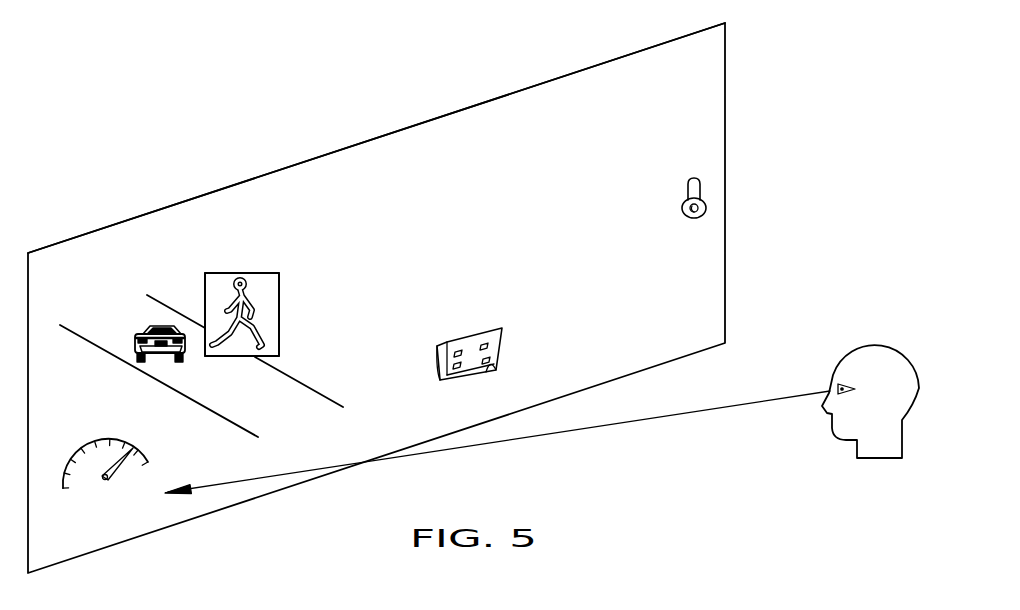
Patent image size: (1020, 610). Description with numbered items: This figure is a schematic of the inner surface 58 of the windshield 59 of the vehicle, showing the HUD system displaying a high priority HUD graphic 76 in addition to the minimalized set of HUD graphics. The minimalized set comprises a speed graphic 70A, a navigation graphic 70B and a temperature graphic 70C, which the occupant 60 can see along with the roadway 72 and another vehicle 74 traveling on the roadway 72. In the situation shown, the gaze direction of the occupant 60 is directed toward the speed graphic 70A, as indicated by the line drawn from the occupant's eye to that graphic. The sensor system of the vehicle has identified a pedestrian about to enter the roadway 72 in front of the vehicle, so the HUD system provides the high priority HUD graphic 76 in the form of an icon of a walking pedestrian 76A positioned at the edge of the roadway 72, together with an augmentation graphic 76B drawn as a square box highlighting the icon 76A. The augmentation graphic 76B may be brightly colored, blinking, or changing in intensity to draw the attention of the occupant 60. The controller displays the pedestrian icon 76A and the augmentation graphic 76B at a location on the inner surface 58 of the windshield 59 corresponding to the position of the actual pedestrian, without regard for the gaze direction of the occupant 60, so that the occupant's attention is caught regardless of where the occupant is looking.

The inner surface 58 is at (389, 225).
The windshield 59 is at (200, 193).
The occupant 60 is at (898, 400).
The speed graphic 70A is at (108, 480).
The navigation graphic 70B is at (468, 340).
The temperature graphic 70C is at (694, 214).
The roadway 72 is at (292, 375).
The another vehicle 74 is at (160, 325).
The high priority HUD graphic 76 is at (225, 272).
The icon of a walking pedestrian 76A is at (240, 278).
The augmentation graphic 76B is at (279, 273).